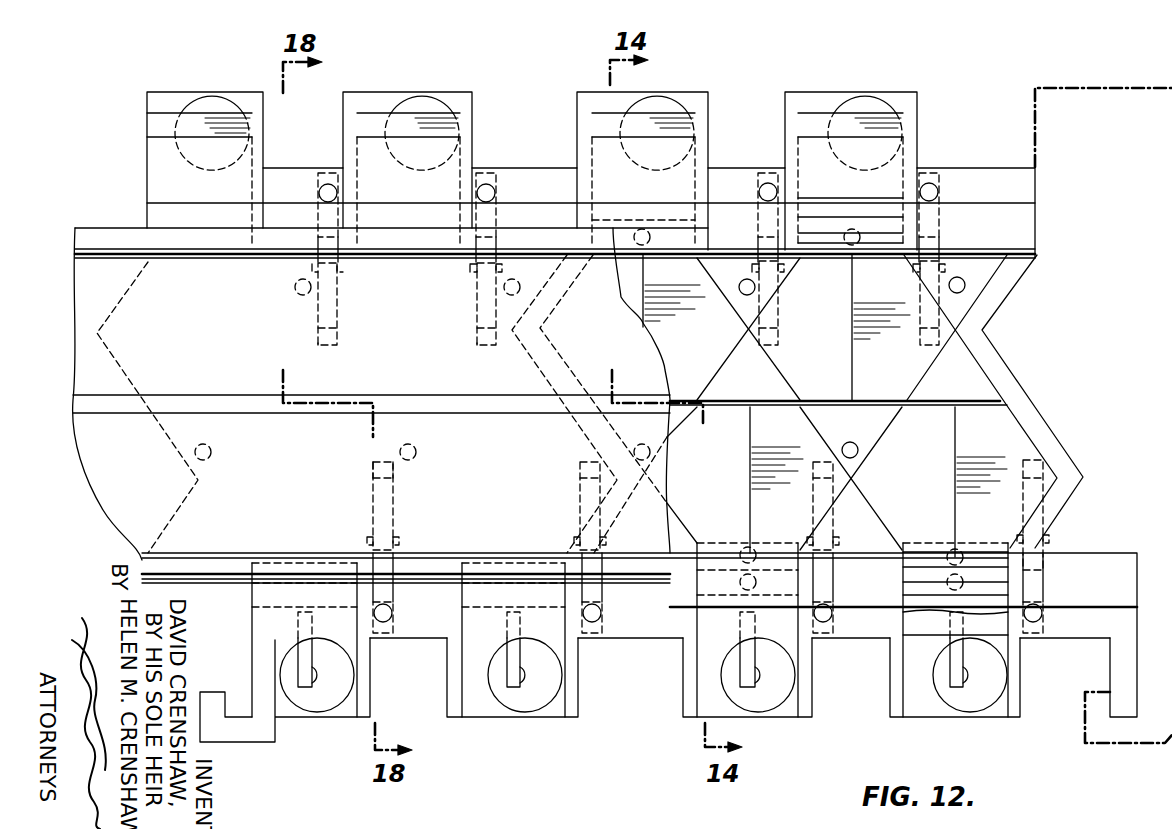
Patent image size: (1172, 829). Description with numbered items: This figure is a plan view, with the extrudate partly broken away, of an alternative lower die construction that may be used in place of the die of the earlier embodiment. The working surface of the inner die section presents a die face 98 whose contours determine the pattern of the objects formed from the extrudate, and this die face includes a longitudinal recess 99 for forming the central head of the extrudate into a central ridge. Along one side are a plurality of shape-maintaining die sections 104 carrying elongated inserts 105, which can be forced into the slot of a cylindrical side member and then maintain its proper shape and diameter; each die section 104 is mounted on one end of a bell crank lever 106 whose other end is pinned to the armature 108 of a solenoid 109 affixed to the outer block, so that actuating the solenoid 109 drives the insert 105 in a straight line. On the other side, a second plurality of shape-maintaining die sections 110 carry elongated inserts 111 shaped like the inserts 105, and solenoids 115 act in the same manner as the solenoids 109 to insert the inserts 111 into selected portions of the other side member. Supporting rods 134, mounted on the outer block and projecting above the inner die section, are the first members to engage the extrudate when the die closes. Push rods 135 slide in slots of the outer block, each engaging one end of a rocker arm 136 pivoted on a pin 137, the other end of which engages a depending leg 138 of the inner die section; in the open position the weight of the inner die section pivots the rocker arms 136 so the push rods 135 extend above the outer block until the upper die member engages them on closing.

The die face 98 is at (980, 377).
The longitudinal recess 99 is at (992, 397).
The shape-maintaining die section 104 is at (277, 647).
The elongated insert 105 is at (268, 560).
The bell crank lever 106 is at (303, 657).
The armature 108 is at (318, 675).
The solenoid 109 is at (318, 705).
The shape-maintaining die section 110 is at (160, 165).
The elongated insert 111 is at (157, 210).
The solenoid 115 is at (207, 105).
The supporting rod 134 is at (295, 290).
The push rod 135 is at (490, 185).
The rocker arm 136 is at (337, 300).
The pin 137 is at (468, 272).
The depending leg 138 is at (318, 343).